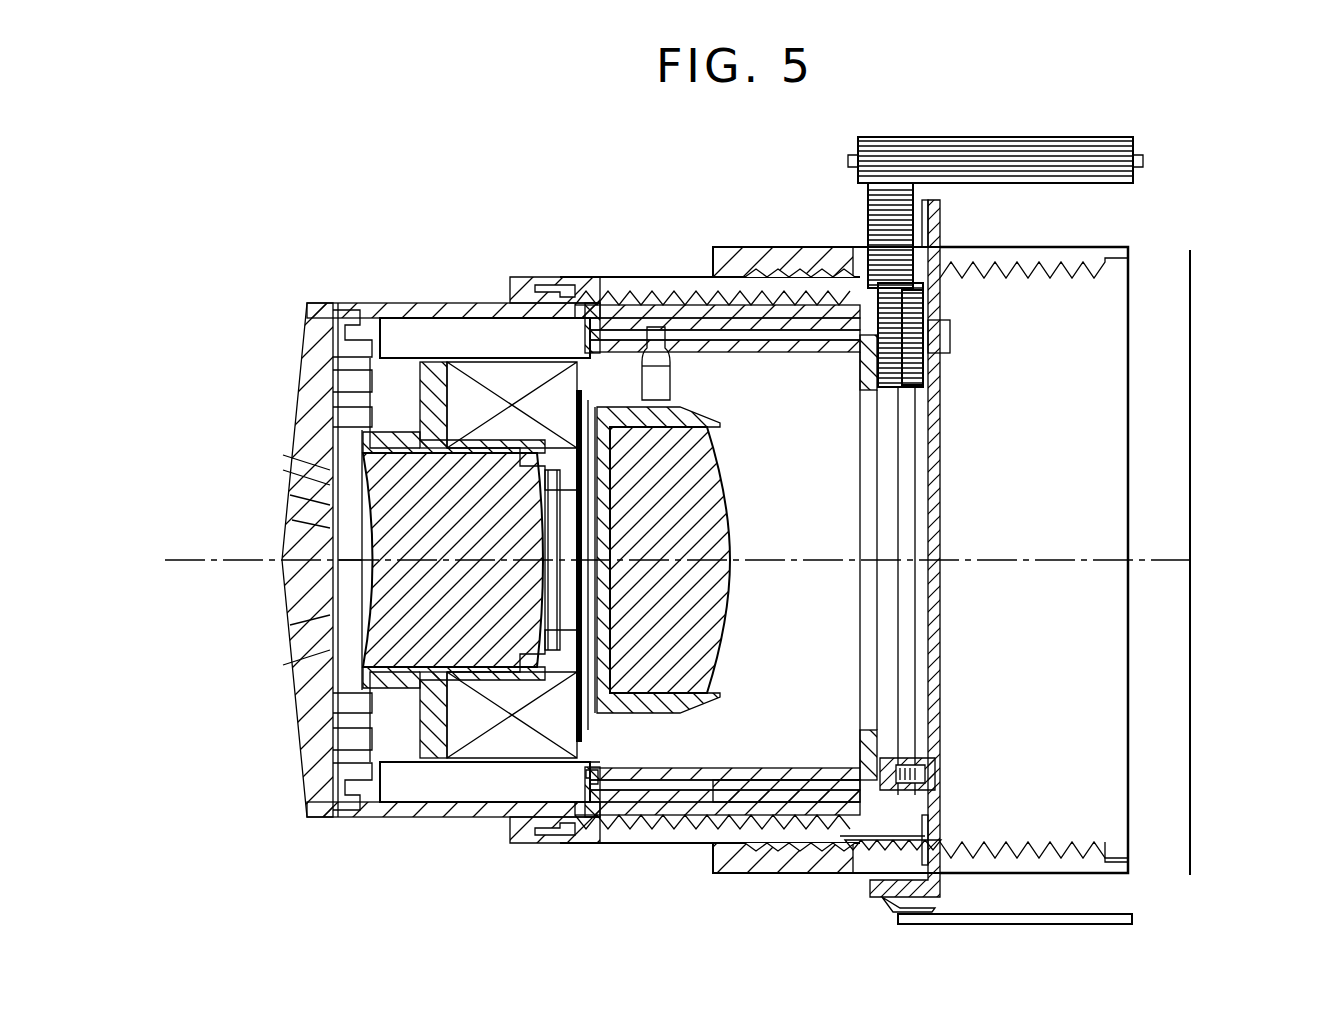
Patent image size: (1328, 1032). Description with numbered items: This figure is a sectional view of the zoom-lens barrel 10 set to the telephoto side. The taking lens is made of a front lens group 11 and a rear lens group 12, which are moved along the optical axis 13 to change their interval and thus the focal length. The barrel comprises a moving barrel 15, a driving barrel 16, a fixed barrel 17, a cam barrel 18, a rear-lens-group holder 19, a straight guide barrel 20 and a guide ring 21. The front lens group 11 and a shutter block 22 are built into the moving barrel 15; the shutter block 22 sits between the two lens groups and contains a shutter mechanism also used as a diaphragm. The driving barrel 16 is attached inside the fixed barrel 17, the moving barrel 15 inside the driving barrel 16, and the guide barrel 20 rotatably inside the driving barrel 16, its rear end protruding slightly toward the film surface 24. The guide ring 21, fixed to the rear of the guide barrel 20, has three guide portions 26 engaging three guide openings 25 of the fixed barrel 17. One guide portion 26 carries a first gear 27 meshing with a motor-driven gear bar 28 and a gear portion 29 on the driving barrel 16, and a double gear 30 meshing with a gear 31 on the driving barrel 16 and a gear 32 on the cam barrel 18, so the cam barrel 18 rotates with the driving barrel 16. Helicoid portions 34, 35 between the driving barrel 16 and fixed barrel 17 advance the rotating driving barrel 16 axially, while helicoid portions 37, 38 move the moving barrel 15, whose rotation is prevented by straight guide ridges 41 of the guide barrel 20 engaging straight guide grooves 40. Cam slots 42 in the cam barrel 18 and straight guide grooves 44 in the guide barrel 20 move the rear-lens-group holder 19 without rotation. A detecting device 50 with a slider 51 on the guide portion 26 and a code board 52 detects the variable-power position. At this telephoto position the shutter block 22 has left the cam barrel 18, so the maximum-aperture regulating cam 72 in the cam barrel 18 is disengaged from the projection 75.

The zoom-lens barrel 10 is at (318, 230).
The front lens group 11 is at (382, 600).
The rear lens group 12 is at (718, 578).
The optical axis 13 is at (213, 560).
The moving barrel 15 is at (405, 294).
The driving barrel 16 is at (538, 270).
The fixed barrel 17 is at (742, 242).
The cam barrel 18 is at (746, 756).
The rear-lens-group holder 19 is at (740, 423).
The straight guide barrel 20 is at (815, 766).
The guide ring 21 is at (942, 670).
The shutter block 22 is at (582, 740).
The film surface 24 is at (1195, 445).
The guide openings 25 is at (1075, 258).
The guide portions 26 is at (940, 211).
The first gear 27 is at (866, 196).
The gear bar 28 is at (1098, 136).
The gear portion 29 is at (925, 290).
The double gear 30 is at (938, 364).
The gear 31 is at (905, 820).
The gear 32 is at (887, 385).
The helicoid portion 34 is at (870, 873).
The helicoid portion 35 is at (1095, 846).
The helicoid portion 37 is at (603, 305).
The helicoid portion 38 is at (824, 335).
The straight guide grooves 40 is at (475, 318).
The straight guide ridges 41 is at (690, 318).
The cam slots 42 is at (706, 330).
The straight guide grooves 44 is at (760, 342).
The detecting device 50 is at (1048, 919).
The slider 51 is at (895, 900).
The code board 52 is at (1152, 913).
The maximum-aperture regulating cam 72 is at (590, 780).
The projection 75 is at (530, 764).